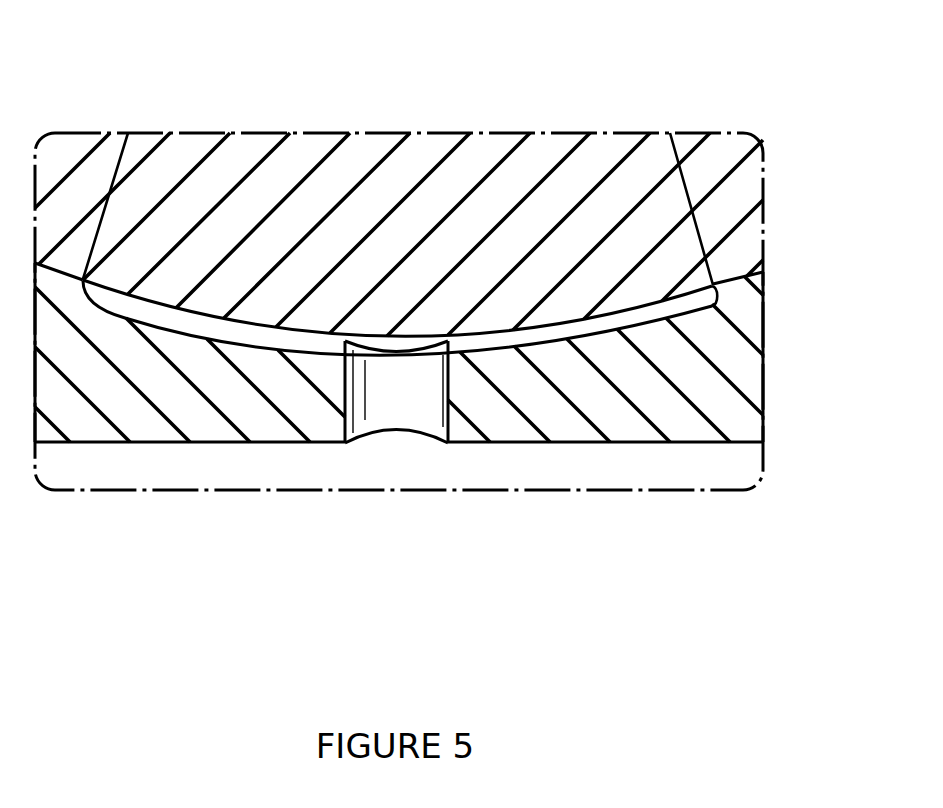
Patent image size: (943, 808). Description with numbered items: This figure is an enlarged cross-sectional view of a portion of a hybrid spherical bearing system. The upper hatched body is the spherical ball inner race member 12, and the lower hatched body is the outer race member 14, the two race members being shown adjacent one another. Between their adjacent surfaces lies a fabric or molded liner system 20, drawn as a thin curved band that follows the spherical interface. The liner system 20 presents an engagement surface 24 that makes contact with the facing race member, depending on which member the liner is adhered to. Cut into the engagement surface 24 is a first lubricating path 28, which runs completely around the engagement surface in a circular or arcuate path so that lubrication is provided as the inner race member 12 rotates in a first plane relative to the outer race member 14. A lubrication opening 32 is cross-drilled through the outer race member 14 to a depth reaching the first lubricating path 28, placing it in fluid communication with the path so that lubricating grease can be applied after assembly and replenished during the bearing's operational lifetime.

The inner race member 12 is at (599, 163).
The outer race member 14 is at (715, 402).
The liner system 20 is at (245, 347).
The engagement surface 24 is at (712, 305).
The first lubricating path 28 is at (397, 353).
The lubrication opening 32 is at (448, 397).